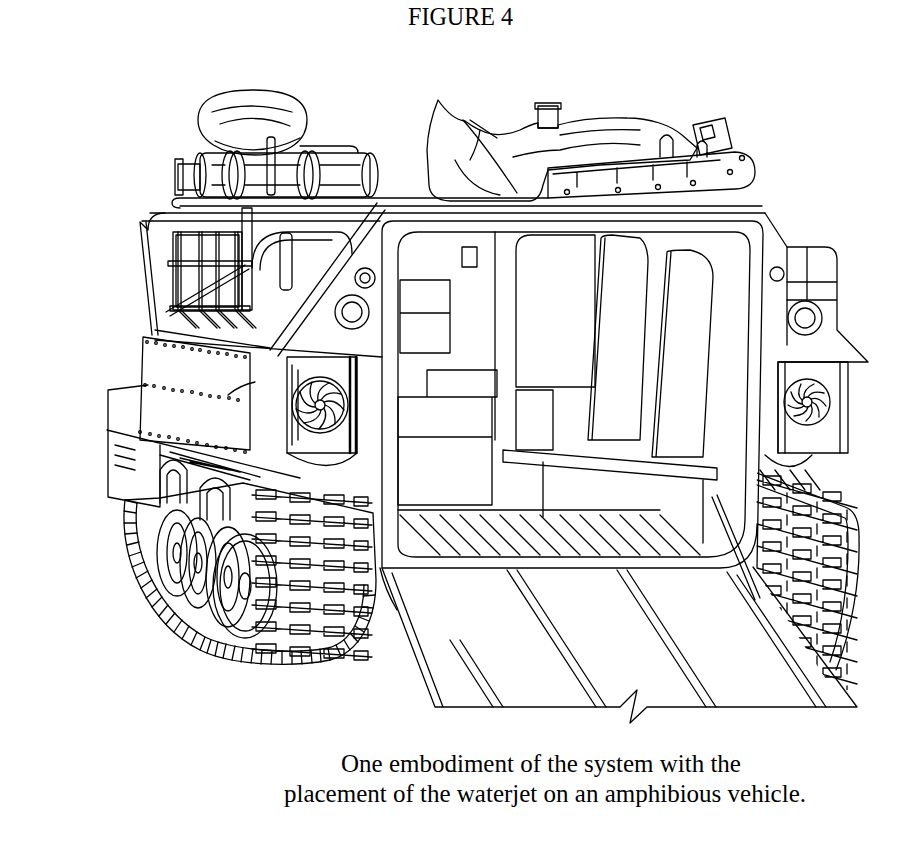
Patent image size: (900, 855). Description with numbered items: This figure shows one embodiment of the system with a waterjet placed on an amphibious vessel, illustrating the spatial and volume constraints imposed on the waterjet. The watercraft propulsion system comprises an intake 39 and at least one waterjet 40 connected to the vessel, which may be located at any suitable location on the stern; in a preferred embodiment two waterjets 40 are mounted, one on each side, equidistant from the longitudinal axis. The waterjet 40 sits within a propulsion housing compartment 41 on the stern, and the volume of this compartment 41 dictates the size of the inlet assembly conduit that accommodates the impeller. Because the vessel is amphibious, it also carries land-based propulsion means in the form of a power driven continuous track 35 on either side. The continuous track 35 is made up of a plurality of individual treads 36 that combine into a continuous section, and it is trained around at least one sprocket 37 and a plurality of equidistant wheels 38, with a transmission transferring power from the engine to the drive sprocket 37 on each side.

The continuous track 35 is at (132, 563).
The treads 36 is at (380, 575).
The sprocket 37 is at (200, 643).
The wheels 38 is at (143, 590).
The intake 39 is at (130, 437).
The waterjet 40 is at (360, 458).
The propulsion housing compartment 41 is at (228, 412).